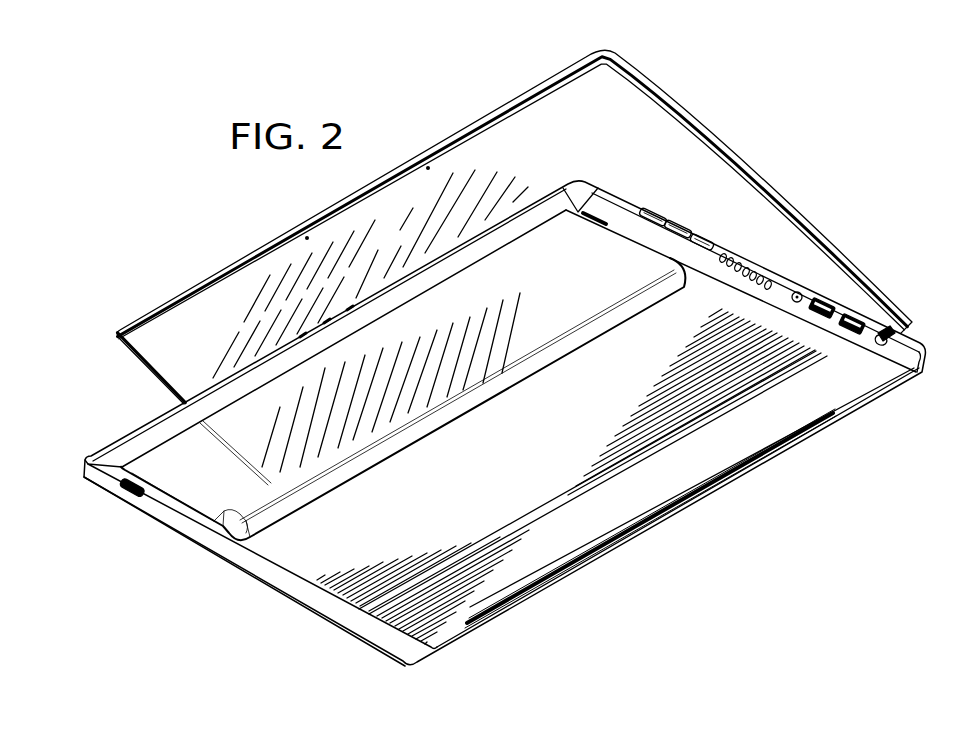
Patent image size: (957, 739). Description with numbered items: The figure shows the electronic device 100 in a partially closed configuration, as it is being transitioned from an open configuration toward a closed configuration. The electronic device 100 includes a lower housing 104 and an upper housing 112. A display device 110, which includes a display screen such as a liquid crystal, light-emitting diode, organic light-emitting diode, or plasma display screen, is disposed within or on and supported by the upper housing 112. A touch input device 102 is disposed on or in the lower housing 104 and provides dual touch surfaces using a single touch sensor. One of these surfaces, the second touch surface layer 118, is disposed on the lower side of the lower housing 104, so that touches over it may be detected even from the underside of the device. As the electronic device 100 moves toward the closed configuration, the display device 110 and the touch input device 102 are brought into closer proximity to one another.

The electronic device 100 is at (834, 158).
The touch input device 102 is at (474, 408).
The lower housing 104 is at (328, 610).
The display device 110 is at (143, 360).
The upper housing 112 is at (230, 258).
The second touch surface layer 118 is at (347, 433).